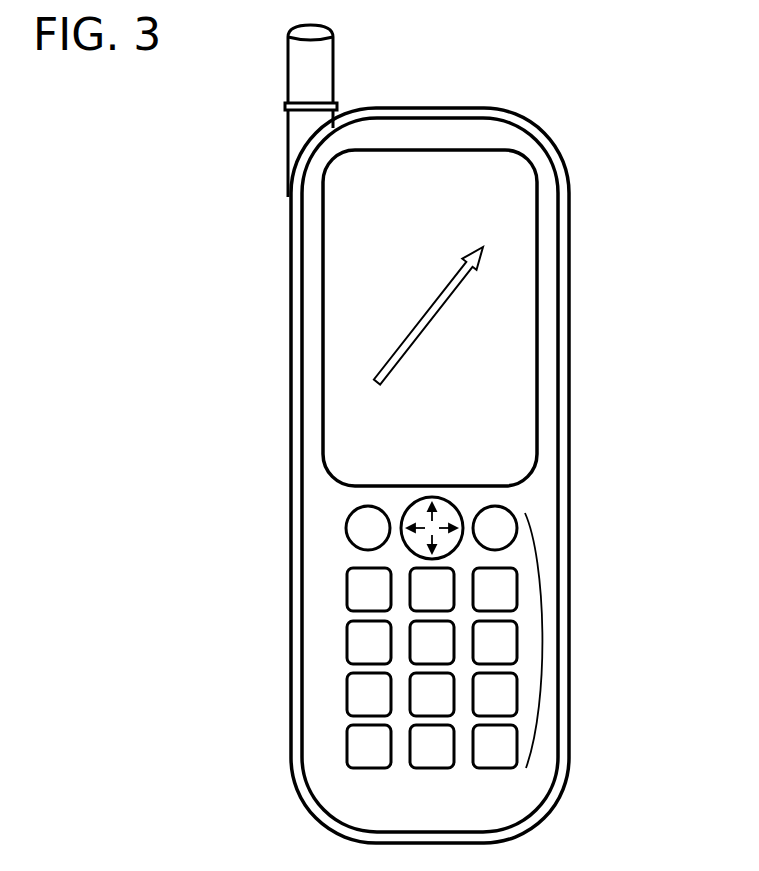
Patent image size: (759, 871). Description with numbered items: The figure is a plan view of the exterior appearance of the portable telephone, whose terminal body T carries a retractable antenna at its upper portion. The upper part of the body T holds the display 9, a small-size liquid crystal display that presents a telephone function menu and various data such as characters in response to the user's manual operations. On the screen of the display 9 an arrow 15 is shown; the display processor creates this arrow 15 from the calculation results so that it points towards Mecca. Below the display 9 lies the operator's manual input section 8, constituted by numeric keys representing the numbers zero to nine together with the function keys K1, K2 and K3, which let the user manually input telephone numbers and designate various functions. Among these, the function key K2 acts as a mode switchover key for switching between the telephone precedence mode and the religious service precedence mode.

The portable telephone body T is at (552, 150).
The display 9 is at (505, 348).
The arrow 15 is at (447, 302).
The function key K1 is at (346, 528).
The function key K2 is at (445, 512).
The function key K3 is at (501, 517).
The operator's manual input section 8 is at (543, 640).